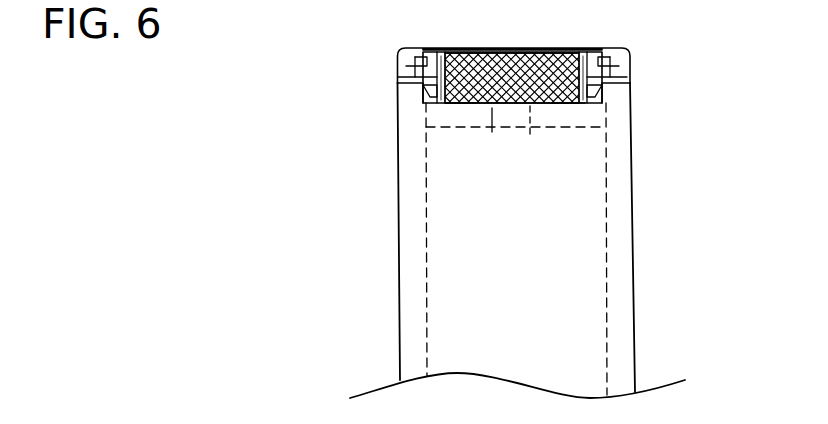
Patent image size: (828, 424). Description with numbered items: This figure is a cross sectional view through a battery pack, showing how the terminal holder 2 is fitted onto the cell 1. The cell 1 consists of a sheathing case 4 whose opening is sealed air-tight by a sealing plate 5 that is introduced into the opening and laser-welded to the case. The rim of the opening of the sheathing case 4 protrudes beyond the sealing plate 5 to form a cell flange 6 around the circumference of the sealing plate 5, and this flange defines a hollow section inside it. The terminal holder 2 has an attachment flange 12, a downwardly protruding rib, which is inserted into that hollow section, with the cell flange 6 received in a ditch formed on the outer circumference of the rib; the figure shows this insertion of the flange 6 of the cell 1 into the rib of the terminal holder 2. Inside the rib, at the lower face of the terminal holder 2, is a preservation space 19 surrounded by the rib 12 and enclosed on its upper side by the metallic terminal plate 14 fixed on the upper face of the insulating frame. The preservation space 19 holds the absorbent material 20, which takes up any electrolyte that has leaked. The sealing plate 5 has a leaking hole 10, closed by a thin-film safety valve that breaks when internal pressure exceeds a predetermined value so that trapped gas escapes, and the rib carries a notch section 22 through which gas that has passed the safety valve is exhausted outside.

The cell 1 is at (345, 197).
The terminal holder 2 is at (628, 57).
The sheathing case 4 is at (398, 240).
The sealing plate 5 is at (544, 118).
The cell flange 6 is at (398, 86).
The leaking hole 10 is at (483, 124).
The attachment flange 12 is at (420, 105).
The terminal plate 14 is at (510, 49).
The preservation space 19 is at (423, 52).
The absorbent material 20 is at (467, 49).
The notch section 22 is at (460, 104).